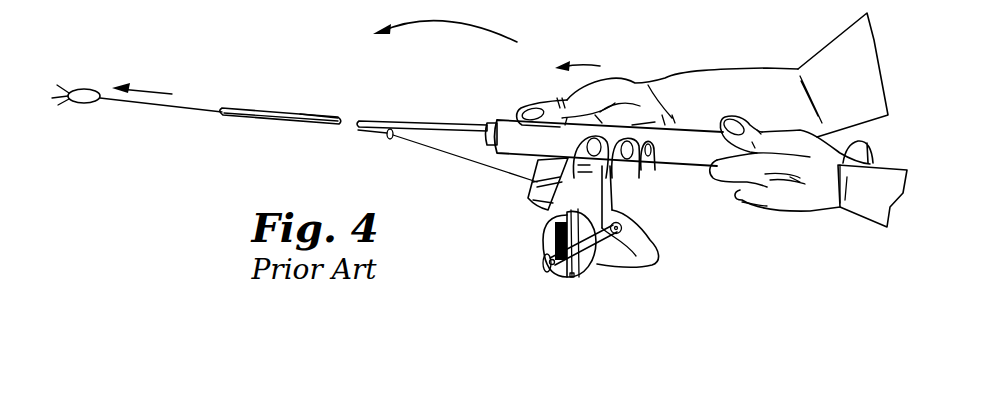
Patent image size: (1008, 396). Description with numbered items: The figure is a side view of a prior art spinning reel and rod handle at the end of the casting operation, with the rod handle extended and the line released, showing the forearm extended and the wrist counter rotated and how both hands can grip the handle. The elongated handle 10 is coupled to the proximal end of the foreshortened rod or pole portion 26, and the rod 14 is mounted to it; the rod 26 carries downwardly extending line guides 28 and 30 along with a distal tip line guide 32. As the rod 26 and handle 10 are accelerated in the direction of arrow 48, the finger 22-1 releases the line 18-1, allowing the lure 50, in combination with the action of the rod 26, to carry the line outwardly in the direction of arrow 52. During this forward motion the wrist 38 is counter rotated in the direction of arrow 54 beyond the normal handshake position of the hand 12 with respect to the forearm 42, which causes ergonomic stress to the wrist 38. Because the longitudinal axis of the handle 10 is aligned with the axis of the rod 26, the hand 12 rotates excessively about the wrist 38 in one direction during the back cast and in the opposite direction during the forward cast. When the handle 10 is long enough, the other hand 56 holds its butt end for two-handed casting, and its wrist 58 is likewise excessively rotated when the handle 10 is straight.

The elongated handle 10 is at (678, 158).
The hand 12 is at (633, 106).
The rod 14 is at (609, 277).
The line 18-1 is at (468, 163).
The finger 22-1 is at (537, 198).
The rod or pole portion 26 is at (340, 102).
The line guide 28 is at (388, 139).
The line guide 30 is at (323, 125).
The distal tip line guide 32 is at (220, 110).
The wrist 38 is at (713, 95).
The forearm 42 is at (725, 68).
The arrow 48 is at (485, 30).
The lure 50 is at (87, 104).
The arrow 52 is at (142, 91).
The arrow 54 is at (593, 65).
The other hand 56 is at (823, 214).
The wrist 58 is at (867, 138).